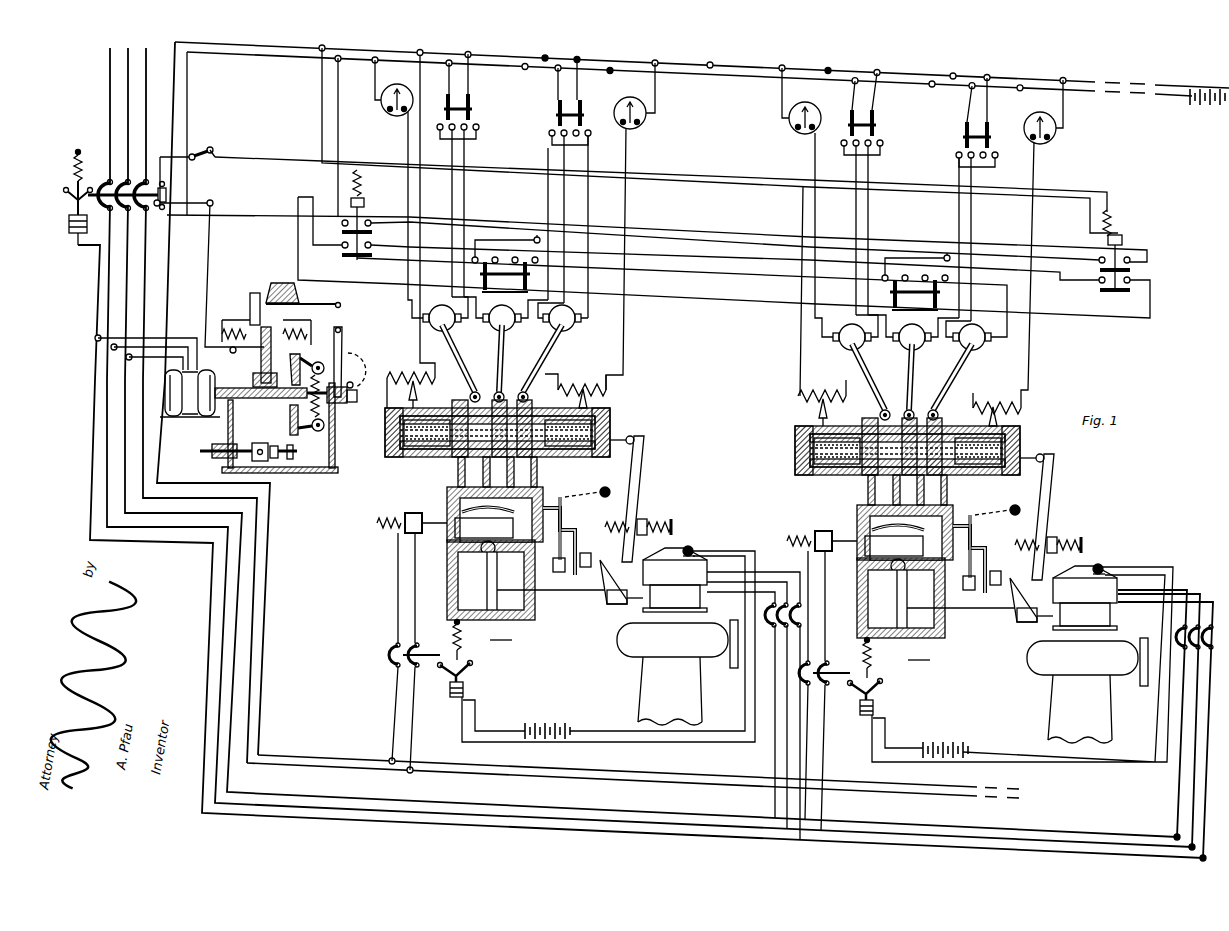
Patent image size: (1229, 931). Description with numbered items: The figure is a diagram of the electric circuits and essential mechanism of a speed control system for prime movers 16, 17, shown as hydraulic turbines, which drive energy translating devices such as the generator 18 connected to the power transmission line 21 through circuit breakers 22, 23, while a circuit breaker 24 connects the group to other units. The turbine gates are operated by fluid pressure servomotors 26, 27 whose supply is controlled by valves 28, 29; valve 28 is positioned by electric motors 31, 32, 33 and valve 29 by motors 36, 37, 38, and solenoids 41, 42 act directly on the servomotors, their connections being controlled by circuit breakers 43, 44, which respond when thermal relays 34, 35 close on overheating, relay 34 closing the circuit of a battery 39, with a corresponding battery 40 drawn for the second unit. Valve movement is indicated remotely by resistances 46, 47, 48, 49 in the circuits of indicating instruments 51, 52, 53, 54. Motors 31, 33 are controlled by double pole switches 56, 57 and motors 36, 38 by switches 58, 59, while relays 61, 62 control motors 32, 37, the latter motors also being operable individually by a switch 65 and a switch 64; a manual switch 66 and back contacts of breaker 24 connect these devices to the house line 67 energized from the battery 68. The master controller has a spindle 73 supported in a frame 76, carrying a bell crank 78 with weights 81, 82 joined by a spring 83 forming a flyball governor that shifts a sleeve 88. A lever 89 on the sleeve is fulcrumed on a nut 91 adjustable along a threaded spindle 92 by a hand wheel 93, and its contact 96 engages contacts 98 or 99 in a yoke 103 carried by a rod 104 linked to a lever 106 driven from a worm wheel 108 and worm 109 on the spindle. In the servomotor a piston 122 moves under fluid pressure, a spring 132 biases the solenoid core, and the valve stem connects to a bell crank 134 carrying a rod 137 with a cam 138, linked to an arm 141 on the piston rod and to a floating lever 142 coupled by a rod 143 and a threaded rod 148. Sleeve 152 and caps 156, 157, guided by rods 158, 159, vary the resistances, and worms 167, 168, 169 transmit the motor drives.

The prime mover 16 is at (618, 646).
The prime mover 17 is at (1030, 666).
The energy translating device 18 is at (692, 587).
The electric power transmission line 21 is at (128, 82).
The circuit breaker 22 is at (779, 721).
The circuit breaker 23 is at (1190, 642).
The circuit breaker 24 is at (90, 185).
The servomotor 26 is at (501, 632).
The servomotor 27 is at (919, 652).
The valve 28 is at (450, 508).
The valve 29 is at (860, 523).
The electric motor 31 is at (443, 344).
The electric motor 32 is at (506, 344).
The electric motor 33 is at (555, 347).
The thermal relay 34 is at (688, 548).
The thermal relay 35 is at (1098, 566).
The electric motor 36 is at (854, 362).
The electric motor 37 is at (913, 362).
The electric motor 38 is at (962, 365).
The battery 39 is at (549, 728).
The battery 40 is at (948, 744).
The solenoid 41 is at (411, 512).
The solenoid 42 is at (823, 531).
The circuit breaker 43 is at (430, 665).
The circuit breaker 44 is at (844, 682).
The resistance 46 is at (411, 231).
The resistance 47 is at (575, 384).
The resistance 48 is at (822, 294).
The resistance 49 is at (997, 402).
The indicating instrument 51 is at (397, 84).
The indicating instrument 52 is at (630, 226).
The indicating instrument 53 is at (807, 202).
The indicating instrument 54 is at (1042, 244).
The double pole switch 56 is at (470, 100).
The double pole switch 57 is at (582, 104).
The double pole switch 58 is at (877, 116).
The double pole switch 59 is at (989, 128).
The relay 61 is at (364, 201).
The relay 62 is at (1122, 236).
The switch 64 is at (916, 281).
The switch 65 is at (506, 263).
The manually operable switch 66 is at (200, 153).
The house line 67 is at (704, 66).
The battery 68 is at (1210, 104).
The spindle 73 is at (228, 388).
The frame 76 is at (283, 283).
The bell crank 78 is at (183, 418).
The weight 81 is at (309, 365).
The weight 82 is at (307, 427).
The spring 83 is at (327, 423).
The sleeve 88 is at (280, 428).
The lever 89 is at (257, 375).
The nut 91 is at (259, 461).
The threaded spindle 92 is at (287, 453).
The hand wheel 93 is at (219, 454).
The contact 96 is at (260, 346).
The contact 98 is at (245, 316).
The contact 99 is at (297, 337).
The yoke 103 is at (253, 293).
The rod 104 is at (334, 304).
The lever 106 is at (344, 325).
The worm wheel 108 is at (355, 362).
The worm 109 is at (346, 405).
The piston 122 is at (488, 596).
The spring 132 is at (383, 530).
The bell crank 134 is at (579, 512).
The rod 137 is at (556, 569).
The cam 138 is at (585, 569).
The arm 141 is at (607, 593).
The floating lever 142 is at (641, 482).
The rod 143 is at (675, 530).
The screw threaded rod 148 is at (612, 447).
The externally threaded sleeve 152 is at (438, 452).
The cap 156 is at (390, 455).
The cap 157 is at (611, 428).
The rod 158 is at (408, 395).
The rod 159 is at (592, 401).
The worm 167 is at (470, 395).
The worm 168 is at (496, 391).
The worm 169 is at (521, 391).